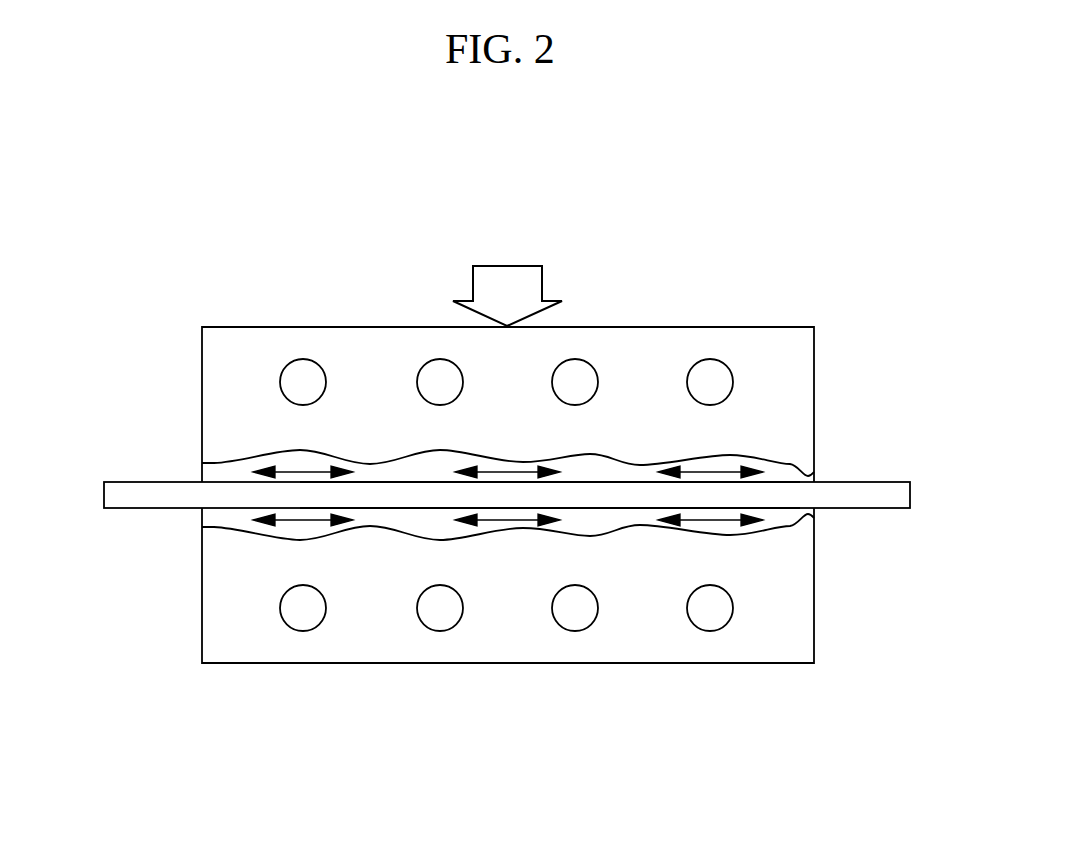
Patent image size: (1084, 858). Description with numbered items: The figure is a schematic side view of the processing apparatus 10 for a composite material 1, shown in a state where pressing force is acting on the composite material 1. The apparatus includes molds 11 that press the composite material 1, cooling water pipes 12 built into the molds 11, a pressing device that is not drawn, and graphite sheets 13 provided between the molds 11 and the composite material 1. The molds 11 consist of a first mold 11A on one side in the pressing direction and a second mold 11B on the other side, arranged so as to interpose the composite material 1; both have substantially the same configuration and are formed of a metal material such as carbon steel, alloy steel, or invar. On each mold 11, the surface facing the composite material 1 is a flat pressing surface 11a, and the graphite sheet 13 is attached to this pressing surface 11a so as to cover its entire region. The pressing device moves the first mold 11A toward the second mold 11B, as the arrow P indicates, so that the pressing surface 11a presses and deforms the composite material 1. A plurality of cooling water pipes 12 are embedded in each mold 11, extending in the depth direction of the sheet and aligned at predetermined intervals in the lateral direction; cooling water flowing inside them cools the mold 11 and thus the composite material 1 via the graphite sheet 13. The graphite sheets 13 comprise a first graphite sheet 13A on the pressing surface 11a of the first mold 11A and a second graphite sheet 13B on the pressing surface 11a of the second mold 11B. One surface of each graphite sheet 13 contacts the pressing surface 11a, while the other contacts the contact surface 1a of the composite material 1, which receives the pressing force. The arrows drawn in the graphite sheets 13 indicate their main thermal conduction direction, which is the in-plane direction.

The composite material 1 is at (896, 497).
The contact surface 1a is at (607, 510).
The processing apparatus 10 is at (766, 240).
The mold 11 is at (578, 495).
The first mold 11A is at (795, 381).
The second mold 11B is at (795, 614).
The pressing surface 11a is at (813, 473).
The cooling water pipe 12 is at (325, 380).
The graphite sheet 13 is at (403, 498).
The first graphite sheet 13A is at (212, 472).
The second graphite sheet 13B is at (212, 518).